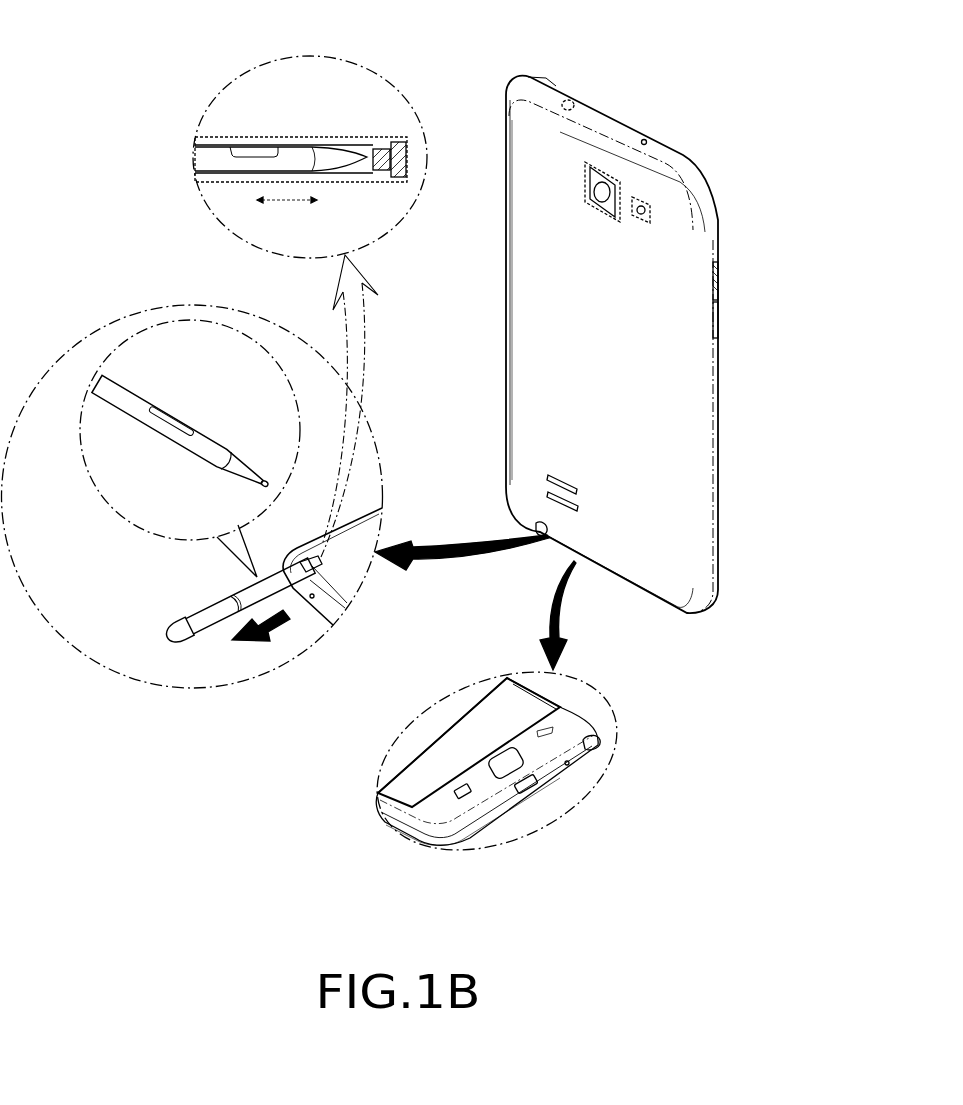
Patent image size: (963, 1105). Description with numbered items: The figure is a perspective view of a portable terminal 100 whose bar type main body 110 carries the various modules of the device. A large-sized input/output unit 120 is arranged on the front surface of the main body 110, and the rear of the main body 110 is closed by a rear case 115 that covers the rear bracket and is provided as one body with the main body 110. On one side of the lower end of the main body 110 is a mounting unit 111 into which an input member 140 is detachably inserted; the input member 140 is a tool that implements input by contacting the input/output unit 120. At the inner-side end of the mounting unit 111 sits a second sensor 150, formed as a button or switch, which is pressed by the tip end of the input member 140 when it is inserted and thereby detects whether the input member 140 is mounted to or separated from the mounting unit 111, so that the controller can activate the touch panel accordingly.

The portable terminal 100 is at (498, 50).
The main body 110 is at (711, 410).
The mounting unit 111 is at (352, 143).
The rear case 115 is at (680, 505).
The input/output unit 120 is at (425, 735).
The input member 140 is at (210, 163).
The second sensor 150 is at (405, 155).